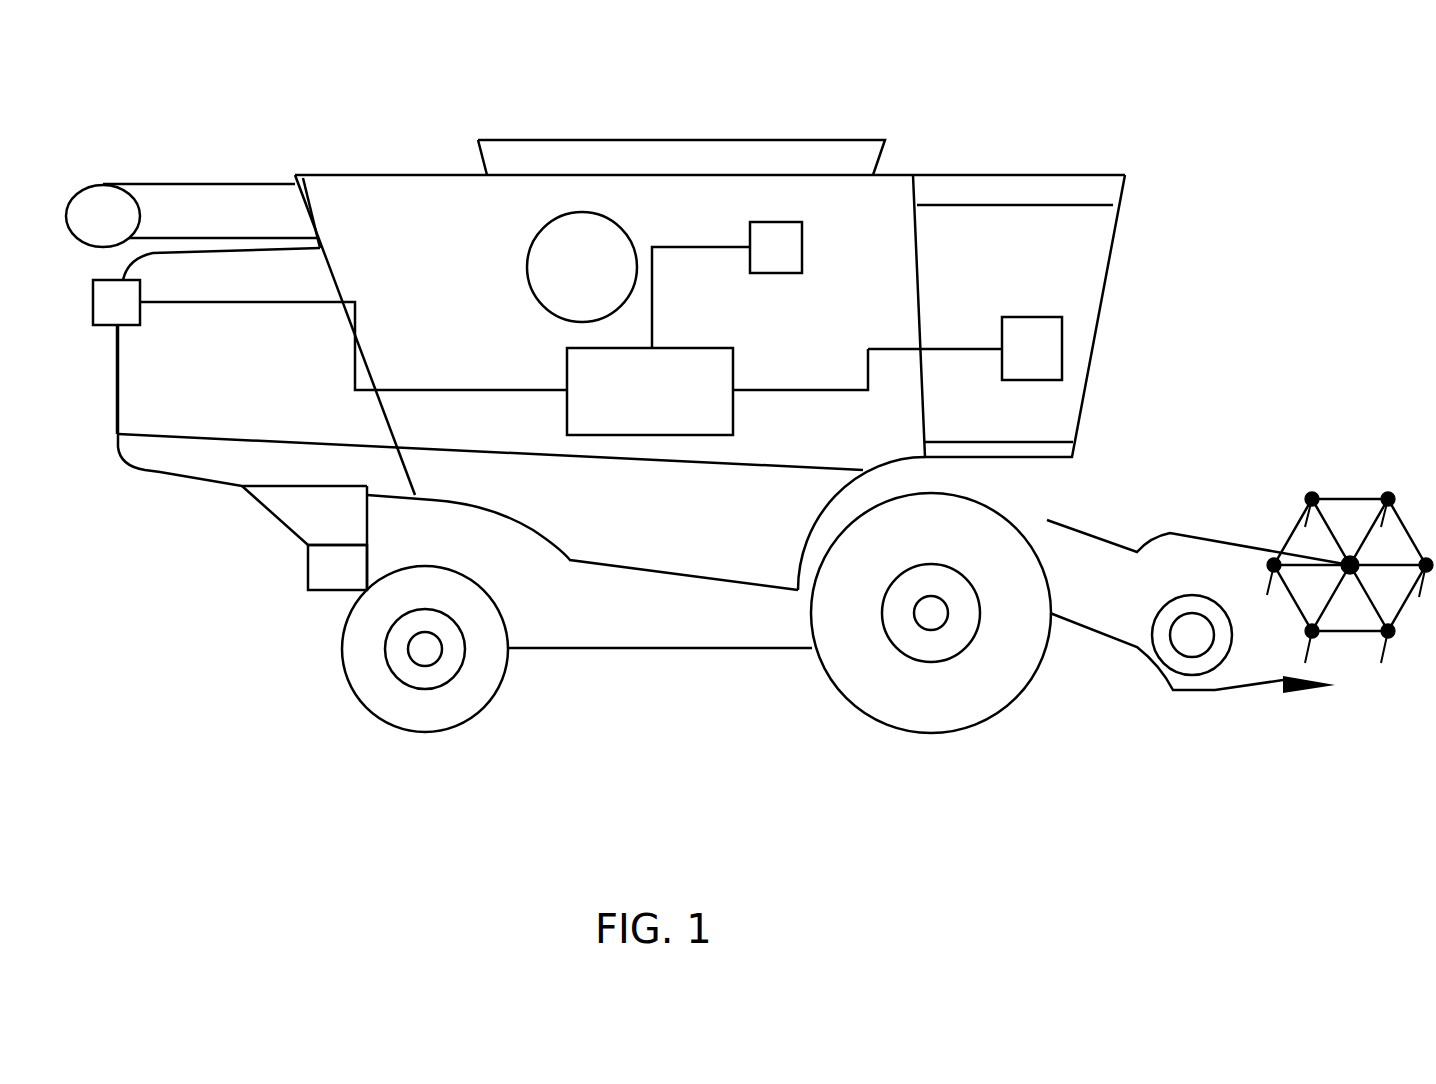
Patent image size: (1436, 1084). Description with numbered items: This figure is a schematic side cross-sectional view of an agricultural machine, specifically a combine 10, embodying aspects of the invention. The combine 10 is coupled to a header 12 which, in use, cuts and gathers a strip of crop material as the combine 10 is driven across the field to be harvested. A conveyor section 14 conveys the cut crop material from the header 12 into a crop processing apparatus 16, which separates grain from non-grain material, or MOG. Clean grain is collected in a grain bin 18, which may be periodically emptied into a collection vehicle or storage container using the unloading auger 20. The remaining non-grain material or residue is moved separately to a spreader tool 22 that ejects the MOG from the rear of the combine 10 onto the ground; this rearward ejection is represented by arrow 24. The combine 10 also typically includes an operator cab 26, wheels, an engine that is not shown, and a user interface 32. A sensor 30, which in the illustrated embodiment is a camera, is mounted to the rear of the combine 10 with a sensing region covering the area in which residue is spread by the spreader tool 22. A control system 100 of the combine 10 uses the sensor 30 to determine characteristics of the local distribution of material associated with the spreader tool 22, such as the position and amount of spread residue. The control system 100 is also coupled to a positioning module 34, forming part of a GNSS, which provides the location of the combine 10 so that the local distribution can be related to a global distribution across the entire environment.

The combine 10 is at (1190, 145).
The header 12 is at (1333, 663).
The conveyor section 14 is at (1113, 638).
The crop processing apparatus 16 is at (697, 558).
The grain bin 18 is at (683, 140).
The unloading auger 20 is at (193, 205).
The spreader tool 22 is at (337, 590).
The arrow 24 is at (277, 590).
The operator cab 26 is at (1060, 247).
The sensor 30 is at (136, 317).
The user interface 32 is at (1062, 349).
The positioning module 34 is at (796, 262).
The control system 100 is at (679, 404).